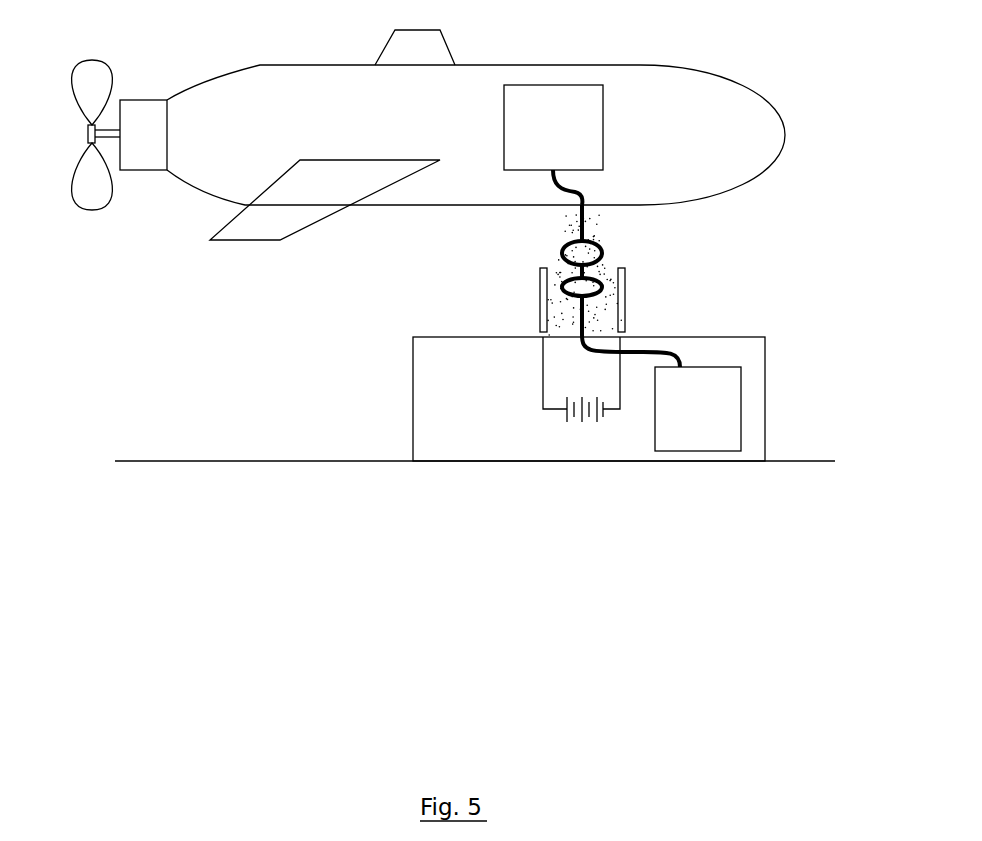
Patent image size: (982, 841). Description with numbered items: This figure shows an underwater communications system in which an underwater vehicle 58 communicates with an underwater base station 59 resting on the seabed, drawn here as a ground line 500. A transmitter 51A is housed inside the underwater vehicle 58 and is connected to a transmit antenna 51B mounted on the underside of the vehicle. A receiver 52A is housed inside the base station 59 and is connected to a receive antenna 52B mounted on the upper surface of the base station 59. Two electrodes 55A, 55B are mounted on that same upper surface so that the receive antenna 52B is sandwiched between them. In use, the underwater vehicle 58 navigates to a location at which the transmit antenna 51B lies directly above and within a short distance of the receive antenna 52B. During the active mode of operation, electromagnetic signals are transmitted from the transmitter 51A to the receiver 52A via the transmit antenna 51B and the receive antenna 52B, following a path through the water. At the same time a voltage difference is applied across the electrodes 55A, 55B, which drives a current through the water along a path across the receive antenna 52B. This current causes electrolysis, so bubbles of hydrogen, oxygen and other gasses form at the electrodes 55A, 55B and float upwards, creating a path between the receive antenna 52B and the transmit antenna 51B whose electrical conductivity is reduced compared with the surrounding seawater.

The underwater vehicle 58 is at (257, 63).
The transmitter 51A is at (553, 127).
The transmit antenna 51B is at (587, 227).
The receiver 52A is at (661, 393).
The receive antenna 52B is at (594, 310).
The electrode 55A is at (540, 303).
The electrode 55B is at (625, 290).
The underwater base station 59 is at (413, 375).
The seabed / ground 500 is at (307, 461).